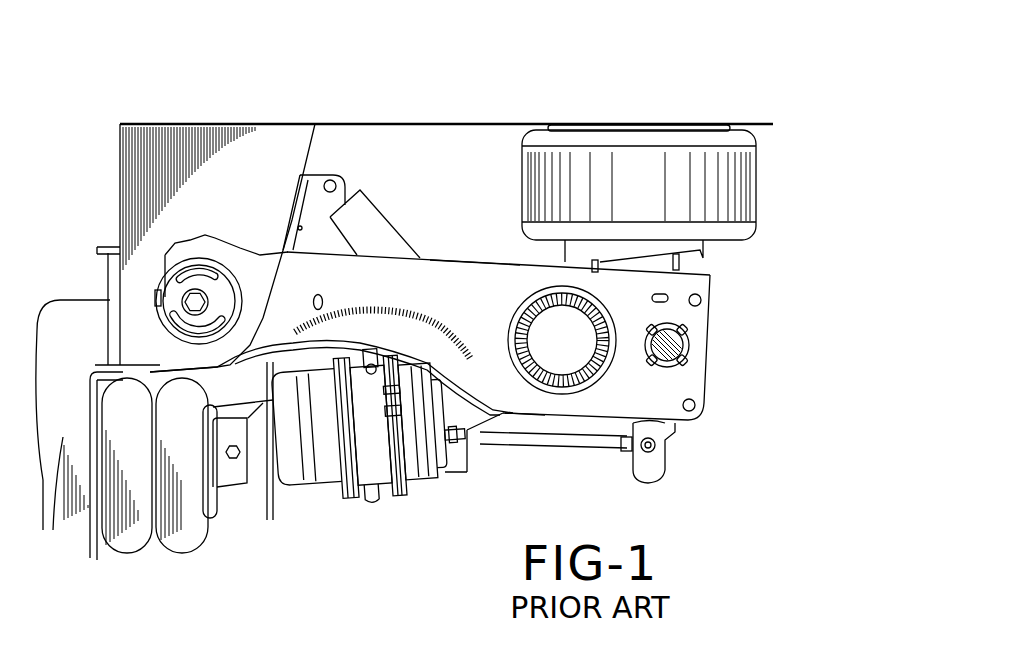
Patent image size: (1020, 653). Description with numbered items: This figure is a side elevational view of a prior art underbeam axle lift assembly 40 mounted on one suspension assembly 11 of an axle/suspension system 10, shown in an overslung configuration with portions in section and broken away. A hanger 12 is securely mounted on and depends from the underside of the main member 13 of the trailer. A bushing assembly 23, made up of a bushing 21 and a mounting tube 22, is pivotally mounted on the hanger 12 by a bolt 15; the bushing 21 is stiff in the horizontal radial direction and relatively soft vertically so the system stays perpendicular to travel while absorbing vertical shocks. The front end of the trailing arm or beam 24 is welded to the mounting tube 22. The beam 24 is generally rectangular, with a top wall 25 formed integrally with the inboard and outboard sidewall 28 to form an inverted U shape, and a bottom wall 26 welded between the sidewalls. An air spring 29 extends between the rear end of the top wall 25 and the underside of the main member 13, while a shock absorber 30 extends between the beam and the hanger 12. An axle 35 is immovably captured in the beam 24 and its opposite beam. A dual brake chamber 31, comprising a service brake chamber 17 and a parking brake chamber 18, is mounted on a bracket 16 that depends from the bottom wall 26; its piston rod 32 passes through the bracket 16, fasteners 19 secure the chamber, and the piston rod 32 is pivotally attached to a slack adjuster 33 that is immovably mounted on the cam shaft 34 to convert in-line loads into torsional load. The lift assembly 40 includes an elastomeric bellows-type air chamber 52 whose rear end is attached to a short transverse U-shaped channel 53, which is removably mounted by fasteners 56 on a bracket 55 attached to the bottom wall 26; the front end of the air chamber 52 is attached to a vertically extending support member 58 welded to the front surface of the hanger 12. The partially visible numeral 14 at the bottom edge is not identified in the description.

The axle/suspension system 10 is at (692, 105).
The suspension assembly 11 is at (444, 227).
The hanger 12 is at (209, 193).
The main member 13 is at (418, 124).
The axle 14 is at (397, 649).
The bolt 15 is at (193, 307).
The bracket 16 is at (473, 437).
The service brake chamber 17 is at (410, 483).
The parking brake chamber 18 is at (310, 485).
The fasteners 19 is at (443, 458).
The bushing 21 is at (217, 293).
The mounting tube 22 is at (232, 284).
The bushing assembly 23 is at (250, 304).
The beam 24 is at (715, 398).
The top wall 25 is at (473, 262).
The bottom wall 26 is at (523, 417).
The outboard sidewall 28 is at (457, 325).
The air spring 29 is at (622, 177).
The shock absorber 30 is at (365, 223).
The dual brake chamber 31 is at (385, 497).
The piston rod 32 is at (557, 437).
The slack adjuster 33 is at (648, 462).
The cam shaft 34 is at (670, 347).
The axle 35 is at (568, 378).
The axle lift assembly 40 is at (88, 568).
The air chamber 52 is at (117, 553).
The U-shaped channel 53 is at (233, 455).
The bracket 55 is at (267, 440).
The fasteners 56 is at (257, 443).
The support member 58 is at (71, 430).